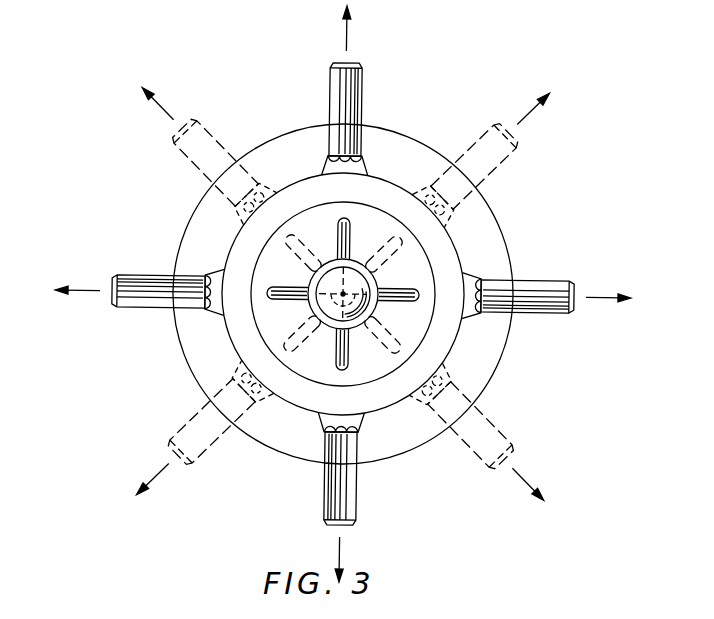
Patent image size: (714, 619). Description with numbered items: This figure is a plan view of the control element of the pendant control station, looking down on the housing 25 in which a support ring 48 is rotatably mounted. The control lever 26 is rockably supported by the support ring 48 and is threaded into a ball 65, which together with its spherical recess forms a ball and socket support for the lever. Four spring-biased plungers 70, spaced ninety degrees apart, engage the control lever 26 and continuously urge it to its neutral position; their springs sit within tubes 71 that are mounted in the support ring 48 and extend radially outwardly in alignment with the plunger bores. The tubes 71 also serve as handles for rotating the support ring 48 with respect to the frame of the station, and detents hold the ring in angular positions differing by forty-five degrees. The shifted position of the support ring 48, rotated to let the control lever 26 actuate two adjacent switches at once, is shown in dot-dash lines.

The housing 25 is at (505, 238).
The support ring 48 is at (452, 352).
The tubes 71 is at (330, 97).
The spring-biased plungers 70 is at (350, 234).
The control lever 26 is at (308, 307).
The ball 65 is at (378, 313).